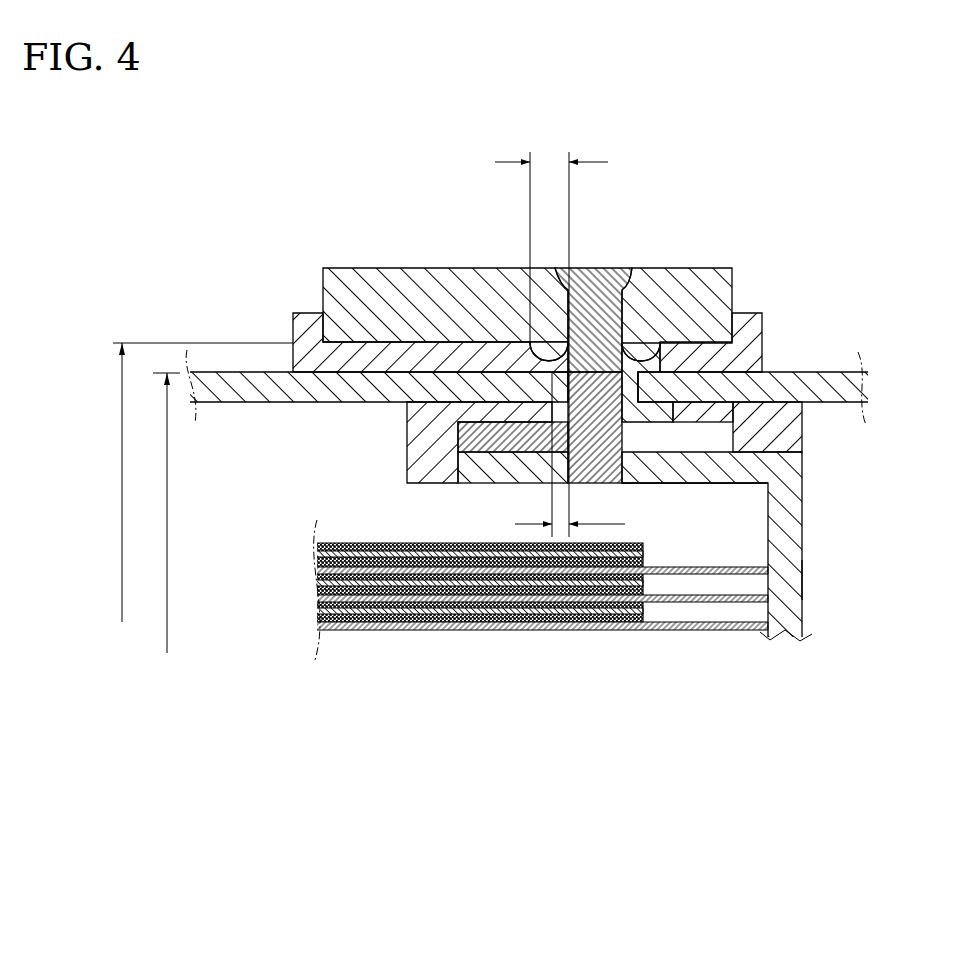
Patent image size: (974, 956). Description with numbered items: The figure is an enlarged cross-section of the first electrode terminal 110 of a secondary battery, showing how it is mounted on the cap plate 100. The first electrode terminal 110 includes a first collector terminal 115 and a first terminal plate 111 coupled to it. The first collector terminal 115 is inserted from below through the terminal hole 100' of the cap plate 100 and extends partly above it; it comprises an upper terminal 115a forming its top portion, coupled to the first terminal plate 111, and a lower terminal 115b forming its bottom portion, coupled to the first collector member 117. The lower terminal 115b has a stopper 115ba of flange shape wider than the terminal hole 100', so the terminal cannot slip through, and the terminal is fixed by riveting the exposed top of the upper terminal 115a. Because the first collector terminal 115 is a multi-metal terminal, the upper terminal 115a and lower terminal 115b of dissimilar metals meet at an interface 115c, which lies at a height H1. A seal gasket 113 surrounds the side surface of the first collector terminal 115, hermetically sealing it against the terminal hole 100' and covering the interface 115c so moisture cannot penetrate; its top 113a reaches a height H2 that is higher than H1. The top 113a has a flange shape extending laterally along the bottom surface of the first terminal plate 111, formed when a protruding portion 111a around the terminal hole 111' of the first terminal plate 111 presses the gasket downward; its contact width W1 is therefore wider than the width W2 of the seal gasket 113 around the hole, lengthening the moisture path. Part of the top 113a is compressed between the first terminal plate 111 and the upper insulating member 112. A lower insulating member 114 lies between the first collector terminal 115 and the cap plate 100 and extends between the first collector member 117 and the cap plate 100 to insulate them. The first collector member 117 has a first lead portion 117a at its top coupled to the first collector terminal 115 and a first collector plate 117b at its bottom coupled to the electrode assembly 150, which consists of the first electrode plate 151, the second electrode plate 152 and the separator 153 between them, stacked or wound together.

The cap plate 100 is at (568, 387).
The terminal hole 100' is at (634, 455).
The first electrode terminal 110 is at (358, 225).
The first terminal plate 111 is at (445, 267).
The terminal hole 111' is at (608, 261).
The protruding portion 111a is at (640, 347).
The upper insulating member 112 is at (750, 320).
The seal gasket 113 is at (677, 410).
The top of the seal gasket 113a is at (683, 363).
The lower insulating member 114 is at (782, 413).
The first collector terminal 115 is at (305, 420).
The upper terminal 115a is at (408, 430).
The lower terminal 115b is at (458, 452).
The stopper 115ba is at (498, 445).
The interface 115c is at (591, 368).
The first collector member 117 is at (893, 482).
The first lead portion 117a is at (727, 470).
The first collector plate 117b is at (797, 555).
The electrode assembly 150 is at (359, 645).
The first electrode plate 151 is at (677, 632).
The second electrode plate 152 is at (497, 618).
The separator 153 is at (563, 630).
The width of the top of the seal gasket W1 is at (551, 333).
The width of the seal gasket W2 is at (570, 454).
The height of the interface H1 is at (159, 513).
The height of the top of the seal gasket H2 is at (190, 482).